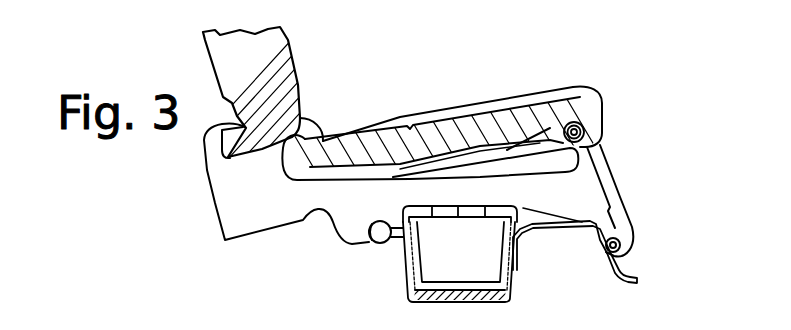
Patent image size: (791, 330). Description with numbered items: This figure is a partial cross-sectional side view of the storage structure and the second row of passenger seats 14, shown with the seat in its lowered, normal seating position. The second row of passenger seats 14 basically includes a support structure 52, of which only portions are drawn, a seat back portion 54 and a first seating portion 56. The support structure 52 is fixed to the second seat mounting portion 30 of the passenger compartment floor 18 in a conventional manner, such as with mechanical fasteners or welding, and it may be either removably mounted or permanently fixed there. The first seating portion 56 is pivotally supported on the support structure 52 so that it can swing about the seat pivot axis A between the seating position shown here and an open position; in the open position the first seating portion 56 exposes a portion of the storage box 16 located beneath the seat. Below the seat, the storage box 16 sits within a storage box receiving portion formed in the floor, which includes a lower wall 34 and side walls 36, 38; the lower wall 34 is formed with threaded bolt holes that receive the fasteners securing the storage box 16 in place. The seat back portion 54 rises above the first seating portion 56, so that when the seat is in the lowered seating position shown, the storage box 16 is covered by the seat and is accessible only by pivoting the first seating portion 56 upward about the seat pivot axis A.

The second row of passenger seats 14 is at (444, 91).
The storage box 16 is at (403, 204).
The passenger compartment floor 18 is at (628, 279).
The second seat mounting portion 30 is at (585, 221).
The lower wall 34 is at (467, 304).
The side wall 36 is at (406, 280).
The side wall 38 is at (517, 266).
The support structure 52 is at (605, 165).
The seat back portion 54 is at (273, 80).
The first seating portion 56 is at (577, 100).
The seat pivot axis A is at (584, 130).